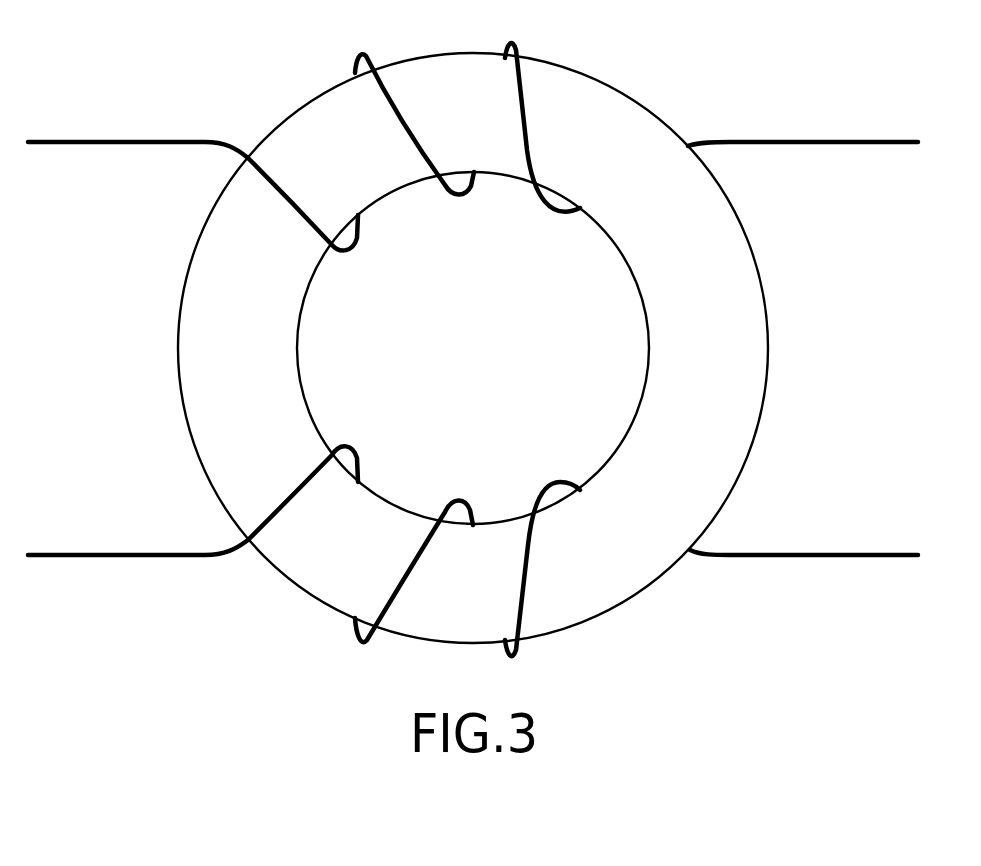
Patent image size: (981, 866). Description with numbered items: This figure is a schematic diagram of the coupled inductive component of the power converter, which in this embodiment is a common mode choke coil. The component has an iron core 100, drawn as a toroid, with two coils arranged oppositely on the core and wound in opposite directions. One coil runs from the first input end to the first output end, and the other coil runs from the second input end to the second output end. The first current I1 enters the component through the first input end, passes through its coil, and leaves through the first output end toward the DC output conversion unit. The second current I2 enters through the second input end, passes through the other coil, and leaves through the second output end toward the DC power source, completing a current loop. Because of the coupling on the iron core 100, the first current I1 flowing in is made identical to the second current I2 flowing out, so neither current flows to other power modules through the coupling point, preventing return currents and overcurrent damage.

The iron core 100 is at (733, 320).
The first current I1 is at (128, 150).
The second current I2 is at (148, 567).